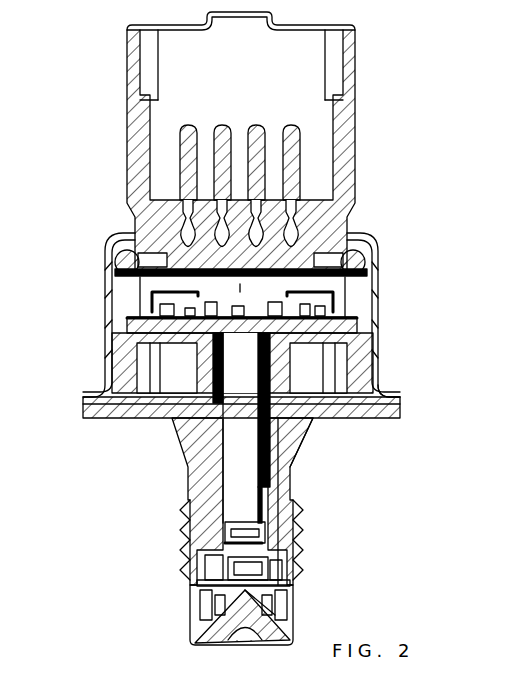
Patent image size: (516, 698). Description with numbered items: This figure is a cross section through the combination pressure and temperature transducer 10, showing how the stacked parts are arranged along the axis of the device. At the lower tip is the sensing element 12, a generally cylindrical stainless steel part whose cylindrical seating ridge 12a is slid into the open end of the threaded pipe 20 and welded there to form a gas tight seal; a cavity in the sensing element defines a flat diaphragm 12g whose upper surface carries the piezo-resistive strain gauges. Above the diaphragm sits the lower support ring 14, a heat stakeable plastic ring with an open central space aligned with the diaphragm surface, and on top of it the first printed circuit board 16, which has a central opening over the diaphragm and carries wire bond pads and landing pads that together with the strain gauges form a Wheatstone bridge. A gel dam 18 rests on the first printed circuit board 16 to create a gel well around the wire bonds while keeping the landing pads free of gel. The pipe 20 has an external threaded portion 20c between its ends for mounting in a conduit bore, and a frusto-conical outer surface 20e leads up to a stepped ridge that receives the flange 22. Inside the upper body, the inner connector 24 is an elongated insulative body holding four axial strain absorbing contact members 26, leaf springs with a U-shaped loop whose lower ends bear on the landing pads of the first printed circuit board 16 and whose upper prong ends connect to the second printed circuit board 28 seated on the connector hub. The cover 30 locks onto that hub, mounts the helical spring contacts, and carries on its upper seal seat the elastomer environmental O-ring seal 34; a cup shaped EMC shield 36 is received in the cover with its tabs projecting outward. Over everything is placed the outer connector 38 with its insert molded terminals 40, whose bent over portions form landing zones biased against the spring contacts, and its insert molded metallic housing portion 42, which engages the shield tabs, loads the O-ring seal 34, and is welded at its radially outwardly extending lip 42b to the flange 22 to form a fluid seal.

The combination pressure and temperature transducer 10 is at (264, 324).
The sensing element 12 is at (192, 632).
The cylindrical seating ridge 12a is at (293, 632).
The flat diaphragm 12g is at (290, 616).
The lower support ring 14 is at (203, 603).
The first printed circuit board 16 is at (200, 587).
The gel dam 18 is at (196, 582).
The threaded pipe 20 is at (170, 433).
The external threaded portion 20c is at (306, 544).
The frusto-conical outer surface 20e is at (296, 452).
The flange 22 is at (362, 420).
The inner connector 24 is at (280, 377).
The axial strain absorbing contact members 26 is at (235, 530).
The second printed circuit board 28 is at (345, 325).
The cover 30 is at (366, 282).
The elastomer environmental O-ring seal 34 is at (356, 271).
The EMC shield 36 is at (150, 297).
The outer connector 38 is at (135, 122).
The insert molded terminals 40 is at (187, 177).
The metallic housing portion 42 is at (378, 268).
The radially outwardly extending lip 42b is at (398, 397).